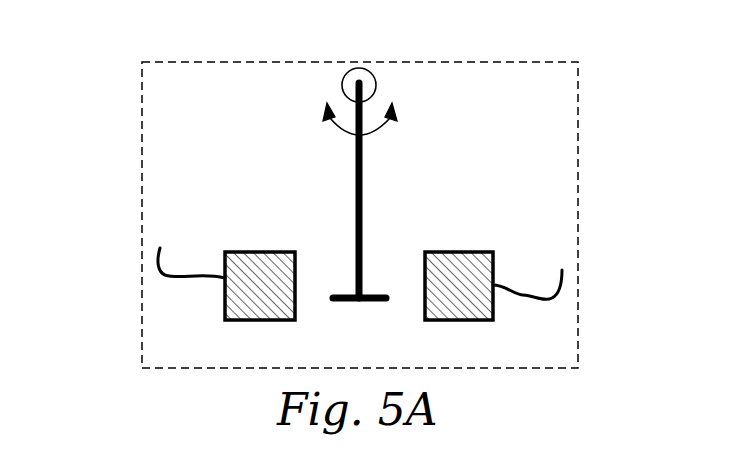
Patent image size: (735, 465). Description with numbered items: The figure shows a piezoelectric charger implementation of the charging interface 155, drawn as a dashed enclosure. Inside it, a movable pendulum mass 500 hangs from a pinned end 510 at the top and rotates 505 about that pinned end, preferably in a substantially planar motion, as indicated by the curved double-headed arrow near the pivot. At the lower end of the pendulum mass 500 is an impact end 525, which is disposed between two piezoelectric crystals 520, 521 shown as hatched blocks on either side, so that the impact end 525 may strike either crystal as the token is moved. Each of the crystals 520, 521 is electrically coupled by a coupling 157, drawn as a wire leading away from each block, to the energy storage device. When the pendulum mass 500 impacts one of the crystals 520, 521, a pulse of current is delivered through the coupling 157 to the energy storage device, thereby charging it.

The charging interface 155 is at (593, 106).
The coupling 157 is at (165, 283).
The movable pendulum mass 500 is at (355, 180).
The rotation 505 is at (343, 133).
The pinned end 510 is at (343, 89).
The piezoelectric crystal 520 is at (260, 320).
The piezoelectric crystal 521 is at (460, 320).
The impact end 525 is at (367, 303).